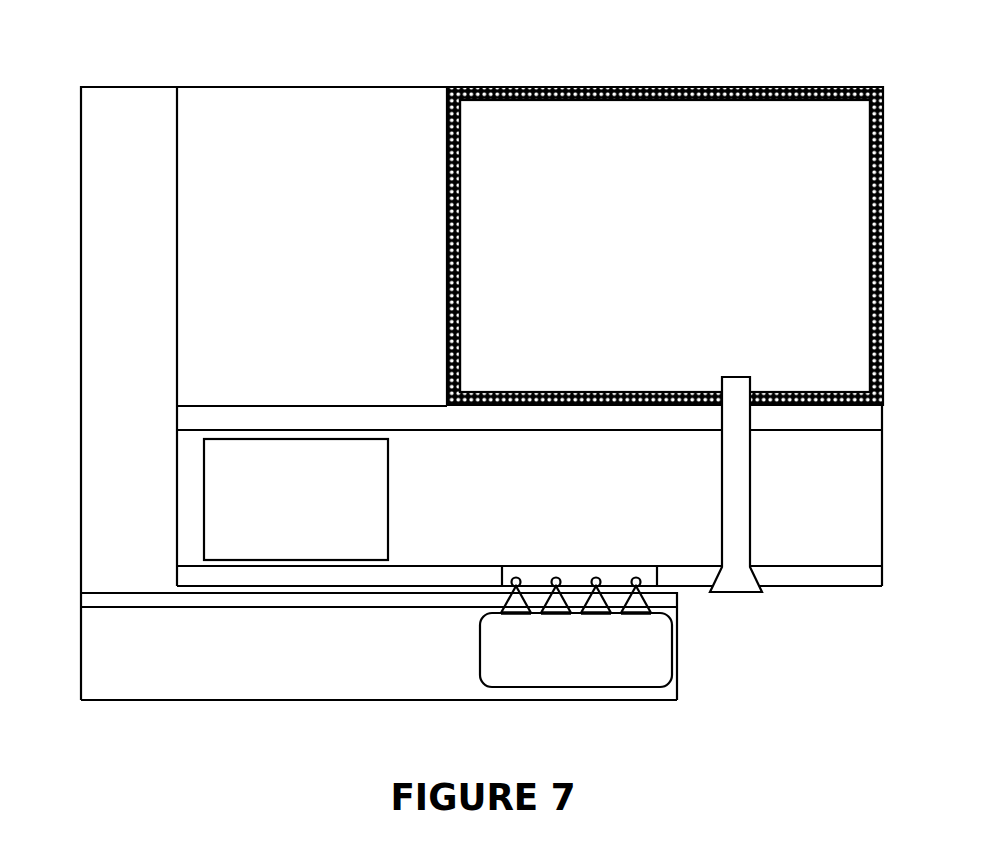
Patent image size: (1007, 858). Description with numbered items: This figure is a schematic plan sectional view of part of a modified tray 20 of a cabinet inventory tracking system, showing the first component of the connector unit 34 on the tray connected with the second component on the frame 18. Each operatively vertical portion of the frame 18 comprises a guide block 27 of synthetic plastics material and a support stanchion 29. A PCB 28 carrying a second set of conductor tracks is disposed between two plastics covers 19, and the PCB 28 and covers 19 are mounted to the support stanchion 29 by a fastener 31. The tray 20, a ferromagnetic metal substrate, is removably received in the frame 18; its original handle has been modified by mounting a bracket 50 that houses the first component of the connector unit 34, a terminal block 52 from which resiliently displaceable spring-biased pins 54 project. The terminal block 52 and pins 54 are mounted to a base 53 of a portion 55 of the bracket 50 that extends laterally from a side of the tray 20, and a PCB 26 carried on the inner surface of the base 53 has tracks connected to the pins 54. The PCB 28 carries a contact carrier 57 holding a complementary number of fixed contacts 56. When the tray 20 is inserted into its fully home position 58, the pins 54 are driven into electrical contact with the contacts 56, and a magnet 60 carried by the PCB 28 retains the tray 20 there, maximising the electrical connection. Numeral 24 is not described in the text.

The frame 18 is at (883, 240).
The plastics covers 19 is at (870, 420).
The tray 20 is at (130, 446).
The air flow 24 is at (712, 648).
The PCB 26 is at (678, 598).
The guide block 27 is at (291, 138).
The PCB 28 is at (825, 497).
The support stanchion 29 is at (650, 130).
The fastener 31 is at (740, 465).
The connector unit 34 is at (640, 653).
The bracket 50 is at (120, 658).
The terminal block 52 is at (543, 660).
The base 53 is at (584, 693).
The spring-biased pins 54 is at (503, 598).
The portion 55 is at (638, 702).
The fixed contacts 56 is at (638, 572).
The contact carrier 57 is at (625, 574).
The fully home position 58 is at (270, 725).
The magnet 60 is at (388, 520).